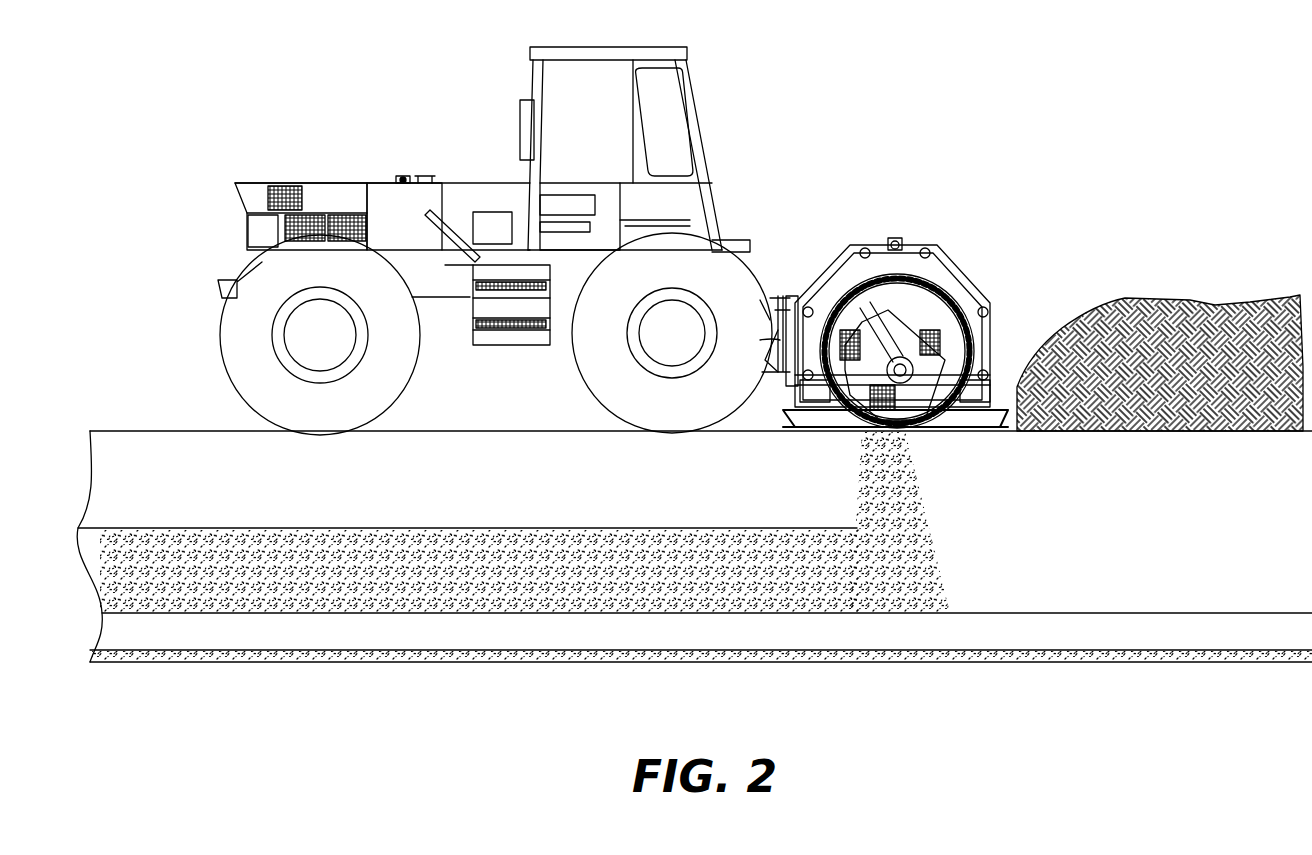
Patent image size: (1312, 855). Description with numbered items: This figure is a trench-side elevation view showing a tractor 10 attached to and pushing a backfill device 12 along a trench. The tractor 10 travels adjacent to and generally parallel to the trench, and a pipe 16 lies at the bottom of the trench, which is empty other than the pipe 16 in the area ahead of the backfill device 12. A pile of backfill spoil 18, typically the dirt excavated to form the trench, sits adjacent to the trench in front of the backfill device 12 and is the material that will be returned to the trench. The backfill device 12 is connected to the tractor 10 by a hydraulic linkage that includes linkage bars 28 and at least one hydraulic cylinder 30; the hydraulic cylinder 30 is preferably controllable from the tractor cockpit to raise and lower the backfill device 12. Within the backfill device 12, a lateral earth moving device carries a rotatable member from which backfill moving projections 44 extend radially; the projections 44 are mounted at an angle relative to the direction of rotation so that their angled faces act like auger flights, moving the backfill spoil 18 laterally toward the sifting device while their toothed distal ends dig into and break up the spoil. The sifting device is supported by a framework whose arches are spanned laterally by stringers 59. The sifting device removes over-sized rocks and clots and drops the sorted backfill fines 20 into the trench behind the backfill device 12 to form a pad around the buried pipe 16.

The tractor 10 is at (380, 183).
The backfill device 12 is at (893, 305).
The pipe 16 is at (172, 640).
The pile of backfill spoil 18 is at (1212, 300).
The backfill fines 20 is at (572, 527).
The linkage bars 28 is at (800, 300).
The hydraulic cylinder 30 is at (780, 300).
The backfill moving projections 44 is at (866, 425).
The stringers 59 is at (930, 253).